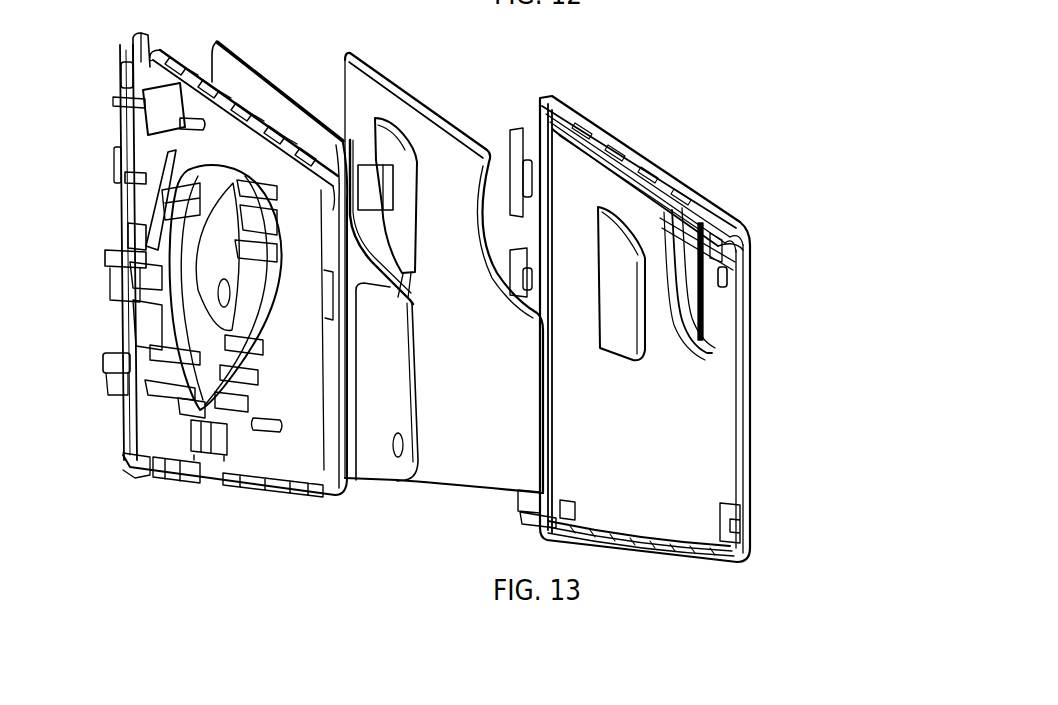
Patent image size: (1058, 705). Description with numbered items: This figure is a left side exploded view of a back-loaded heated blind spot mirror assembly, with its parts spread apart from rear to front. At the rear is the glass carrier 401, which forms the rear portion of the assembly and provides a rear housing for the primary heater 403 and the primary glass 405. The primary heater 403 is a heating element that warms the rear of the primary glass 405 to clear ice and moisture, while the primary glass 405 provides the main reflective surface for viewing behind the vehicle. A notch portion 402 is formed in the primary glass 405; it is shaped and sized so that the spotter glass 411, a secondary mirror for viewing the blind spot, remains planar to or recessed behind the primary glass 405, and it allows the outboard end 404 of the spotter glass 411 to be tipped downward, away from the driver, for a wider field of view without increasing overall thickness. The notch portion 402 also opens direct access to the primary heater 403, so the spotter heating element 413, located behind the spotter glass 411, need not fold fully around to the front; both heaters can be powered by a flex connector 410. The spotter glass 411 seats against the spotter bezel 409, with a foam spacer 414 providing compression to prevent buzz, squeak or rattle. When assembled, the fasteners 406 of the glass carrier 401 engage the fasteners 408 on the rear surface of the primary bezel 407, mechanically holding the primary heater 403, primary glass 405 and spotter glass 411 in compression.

The glass carrier 401 is at (180, 55).
The notch portion 402 is at (485, 183).
The primary heater 403 is at (263, 85).
The outboard end 404 is at (636, 362).
The primary glass 405 is at (457, 463).
The fasteners 406 is at (158, 80).
The primary bezel 407 is at (745, 430).
The fasteners 408 is at (583, 120).
The spotter bezel 409 is at (715, 208).
The flex connector 410 is at (392, 300).
The spotter glass 411 is at (597, 210).
The spotter heating element 413 is at (387, 140).
The spacer 414 is at (372, 183).